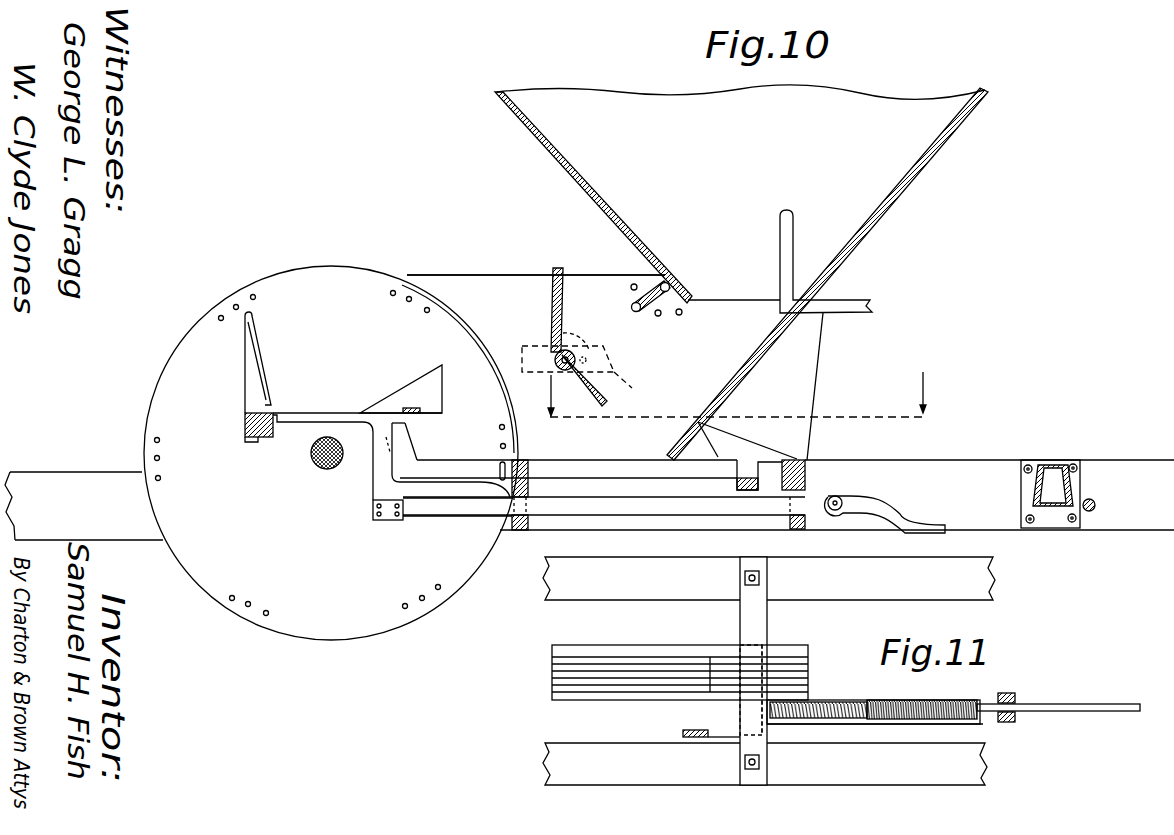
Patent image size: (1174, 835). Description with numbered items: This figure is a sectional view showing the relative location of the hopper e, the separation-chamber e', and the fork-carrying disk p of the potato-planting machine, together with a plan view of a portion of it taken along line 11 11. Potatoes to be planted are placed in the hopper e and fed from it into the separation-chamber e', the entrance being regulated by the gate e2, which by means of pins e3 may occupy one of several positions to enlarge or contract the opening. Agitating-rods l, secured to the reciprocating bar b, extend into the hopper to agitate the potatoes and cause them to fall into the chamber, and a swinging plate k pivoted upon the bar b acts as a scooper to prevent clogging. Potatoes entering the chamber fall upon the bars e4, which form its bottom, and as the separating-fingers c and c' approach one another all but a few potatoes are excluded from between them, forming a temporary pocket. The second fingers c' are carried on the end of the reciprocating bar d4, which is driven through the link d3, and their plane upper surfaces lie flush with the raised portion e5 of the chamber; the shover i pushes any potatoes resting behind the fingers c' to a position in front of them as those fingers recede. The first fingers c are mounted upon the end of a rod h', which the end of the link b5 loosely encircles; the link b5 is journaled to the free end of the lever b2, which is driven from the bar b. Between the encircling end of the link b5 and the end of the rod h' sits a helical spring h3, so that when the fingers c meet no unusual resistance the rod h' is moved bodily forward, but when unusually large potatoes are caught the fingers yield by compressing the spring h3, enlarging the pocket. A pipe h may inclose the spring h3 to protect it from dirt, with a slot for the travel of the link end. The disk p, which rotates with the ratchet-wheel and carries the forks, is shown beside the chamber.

In FIG. 10, the hopper e is at (741, 272).
In FIG. 10, the agitating-rods l is at (778, 240).
In FIG. 10, the swinging plate k is at (563, 332).
In FIG. 10, the reciprocating bar b is at (589, 379).
In FIG. 10, the pins e3 is at (638, 301).
In FIG. 10, the gate e2 is at (641, 312).
In FIG. 10, the section line 11 is at (734, 404).
In FIG. 10, the separating-fingers c is at (747, 440).
In FIG. 11, the separating-fingers c is at (777, 672).
In FIG. 10, the separation-chamber e' is at (536, 366).
In FIG. 10, the bars e4 is at (622, 468).
In FIG. 11, the bars e4 is at (608, 652).
In FIG. 10, the link d3 is at (876, 504).
In FIG. 10, the disk p is at (331, 453).
In FIG. 10, the blade i'' is at (270, 362).
In FIG. 10, the raised portion e5 is at (283, 413).
In FIG. 10, the shover i is at (401, 384).
In FIG. 10, the separating-fingers c' is at (417, 471).
In FIG. 10, the reciprocating bar d4 is at (445, 515).
In FIG. 11, the lever b2 is at (683, 733).
In FIG. 11, the pipe h is at (873, 697).
In FIG. 11, the helical spring h3 is at (972, 700).
In FIG. 11, the rod h' is at (1058, 694).
In FIG. 11, the link b5 is at (975, 736).